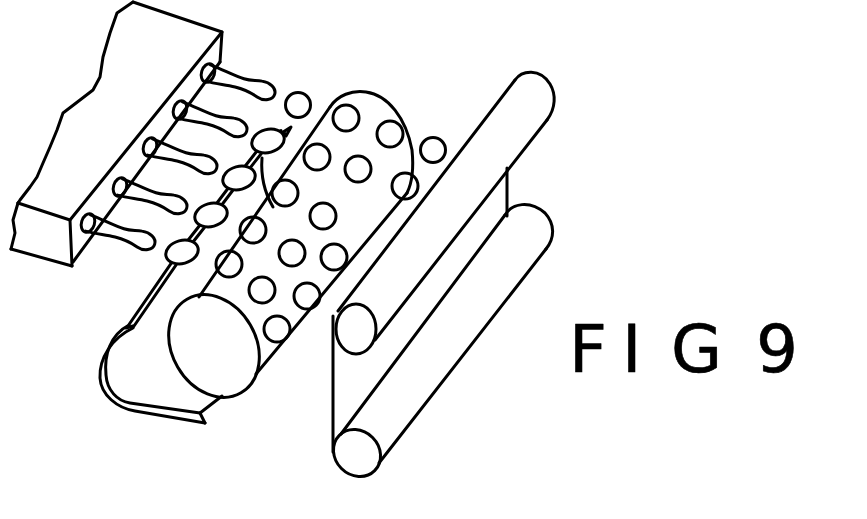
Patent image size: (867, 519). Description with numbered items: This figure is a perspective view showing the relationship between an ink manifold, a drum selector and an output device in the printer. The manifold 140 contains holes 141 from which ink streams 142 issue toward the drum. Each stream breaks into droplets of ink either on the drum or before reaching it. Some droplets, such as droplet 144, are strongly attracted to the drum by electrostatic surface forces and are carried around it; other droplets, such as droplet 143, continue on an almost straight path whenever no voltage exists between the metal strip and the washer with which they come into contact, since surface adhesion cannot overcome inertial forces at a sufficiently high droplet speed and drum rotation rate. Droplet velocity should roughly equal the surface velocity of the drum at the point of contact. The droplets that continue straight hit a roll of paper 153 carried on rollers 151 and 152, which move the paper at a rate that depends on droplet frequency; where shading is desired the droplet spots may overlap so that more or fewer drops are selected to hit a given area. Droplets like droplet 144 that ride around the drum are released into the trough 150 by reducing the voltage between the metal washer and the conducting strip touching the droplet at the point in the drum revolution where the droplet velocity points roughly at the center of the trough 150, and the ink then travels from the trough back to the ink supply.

The manifold 140 is at (116, 134).
The holes 141 is at (204, 67).
The ink streams 142 is at (254, 88).
The droplet 143 is at (436, 146).
The droplet 144 is at (306, 297).
The trough 150 is at (101, 360).
The roller 151 is at (445, 213).
The roller 152 is at (438, 346).
The roll of paper 153 is at (331, 396).